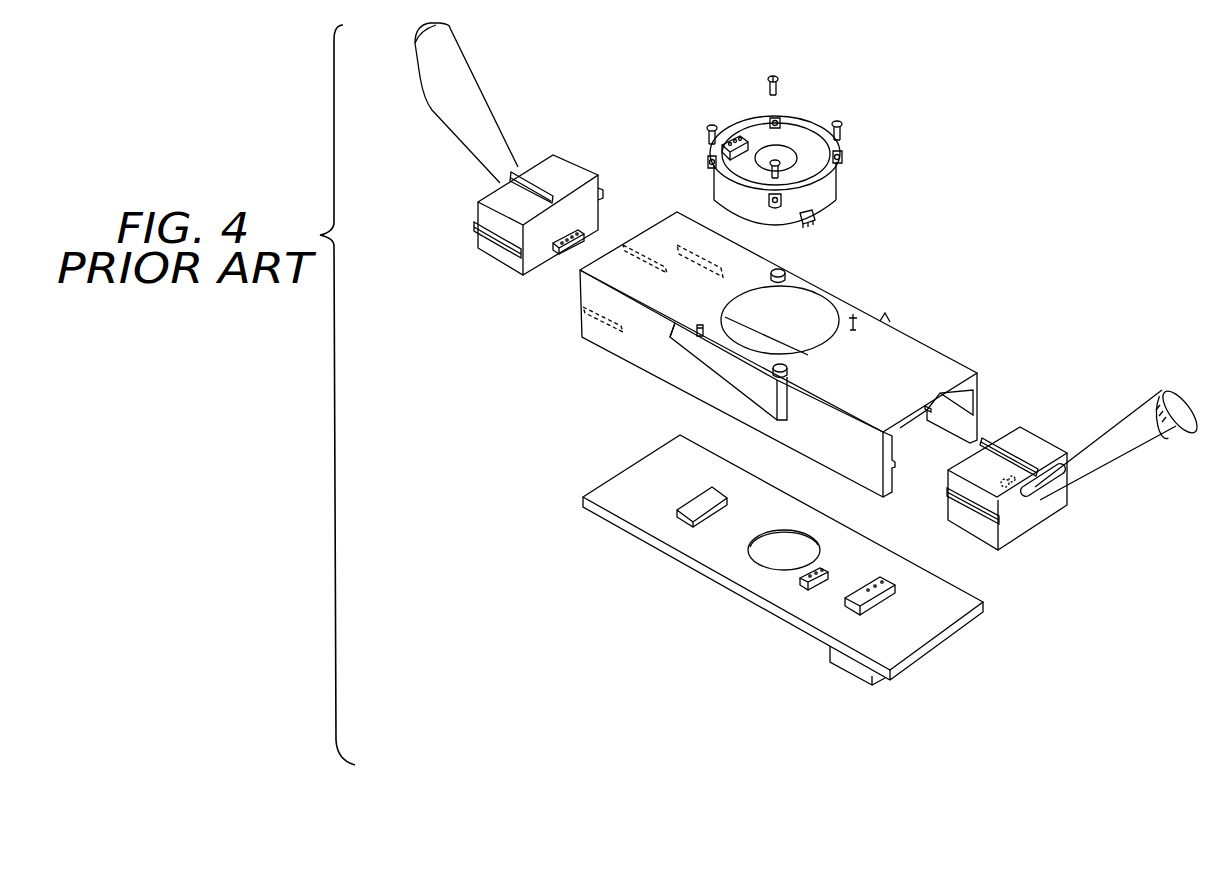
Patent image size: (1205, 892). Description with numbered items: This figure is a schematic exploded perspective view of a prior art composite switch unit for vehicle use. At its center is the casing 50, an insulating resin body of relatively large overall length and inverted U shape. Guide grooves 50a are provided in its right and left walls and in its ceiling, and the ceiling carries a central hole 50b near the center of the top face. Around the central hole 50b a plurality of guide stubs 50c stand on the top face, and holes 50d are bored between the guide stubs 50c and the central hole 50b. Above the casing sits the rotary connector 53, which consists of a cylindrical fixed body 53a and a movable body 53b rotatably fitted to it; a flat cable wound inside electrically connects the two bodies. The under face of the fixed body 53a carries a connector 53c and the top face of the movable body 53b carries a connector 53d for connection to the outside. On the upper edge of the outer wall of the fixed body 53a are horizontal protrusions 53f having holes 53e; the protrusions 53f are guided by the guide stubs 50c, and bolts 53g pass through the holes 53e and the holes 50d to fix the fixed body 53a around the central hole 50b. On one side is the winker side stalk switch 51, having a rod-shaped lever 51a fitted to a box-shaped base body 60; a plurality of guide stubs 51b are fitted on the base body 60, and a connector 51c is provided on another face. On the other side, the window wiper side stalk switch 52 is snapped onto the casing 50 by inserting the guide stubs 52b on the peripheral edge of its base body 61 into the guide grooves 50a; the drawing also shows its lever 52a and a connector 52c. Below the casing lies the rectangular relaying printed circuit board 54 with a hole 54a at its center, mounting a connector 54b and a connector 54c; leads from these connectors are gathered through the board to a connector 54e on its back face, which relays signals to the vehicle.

The casing 50 is at (940, 367).
The guide grooves 50a is at (647, 250).
The central hole 50b is at (818, 308).
The guide stubs 50c is at (694, 332).
The holes 50d is at (712, 318).
The winker side stalk switch 51 is at (1119, 452).
The lever 51a is at (1108, 463).
The guide stubs 51b is at (1000, 443).
The connector 51c is at (1010, 480).
The window wiper side stalk switch 52 is at (473, 103).
The lever shaft 52a is at (453, 110).
The guide stubs 52b is at (550, 197).
The connector 52c is at (555, 255).
The rotary connector 53 is at (791, 148).
The fixed body 53a is at (727, 192).
The movable body 53b is at (760, 140).
The connector 53c is at (815, 227).
The connector 53d is at (732, 137).
The holes 53e is at (840, 147).
The protrusions 53f is at (845, 156).
The bolts 53g is at (772, 76).
The relaying printed circuit board 54 is at (620, 498).
The hole 54a is at (798, 553).
The connector 54b is at (810, 590).
The connector 54c is at (687, 520).
The connector 54e is at (863, 687).
The base body 60 is at (1019, 515).
The base body 61 is at (496, 203).